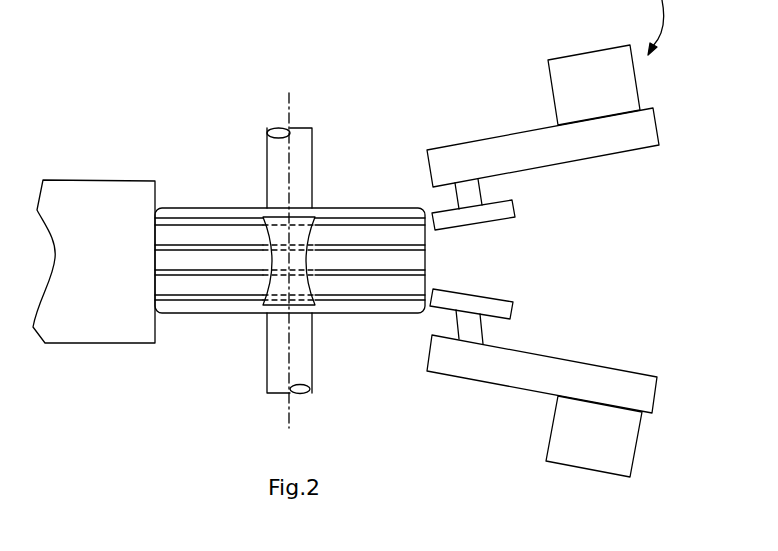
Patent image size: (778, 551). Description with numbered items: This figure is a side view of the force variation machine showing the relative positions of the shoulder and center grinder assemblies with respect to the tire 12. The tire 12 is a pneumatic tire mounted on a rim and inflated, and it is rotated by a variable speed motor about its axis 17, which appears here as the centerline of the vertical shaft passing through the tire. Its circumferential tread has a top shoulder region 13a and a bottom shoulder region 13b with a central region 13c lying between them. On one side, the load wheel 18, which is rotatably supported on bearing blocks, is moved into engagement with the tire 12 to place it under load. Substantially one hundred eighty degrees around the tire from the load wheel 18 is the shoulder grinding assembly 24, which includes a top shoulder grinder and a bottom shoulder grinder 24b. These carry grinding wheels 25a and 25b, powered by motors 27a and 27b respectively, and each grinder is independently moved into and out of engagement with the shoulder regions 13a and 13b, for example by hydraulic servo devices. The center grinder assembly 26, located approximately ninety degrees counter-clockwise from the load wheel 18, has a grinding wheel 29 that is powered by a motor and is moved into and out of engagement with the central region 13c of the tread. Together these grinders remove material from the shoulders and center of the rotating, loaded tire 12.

The tire 12 is at (215, 318).
The top shoulder region 13a is at (434, 254).
The bottom shoulder region 13b is at (440, 277).
The central region 13c is at (444, 239).
The axis 17 is at (289, 97).
The load wheel 18 is at (108, 198).
The shoulder grinding assembly 24 is at (678, 148).
The bottom shoulder grinder 24b is at (668, 486).
The grinding wheel 25a is at (503, 210).
The grinding wheel 25b is at (500, 312).
The center grinder assembly 26 is at (248, 186).
The motor 27a is at (600, 95).
The motor 27b is at (600, 437).
The grinding wheel 29 is at (308, 253).